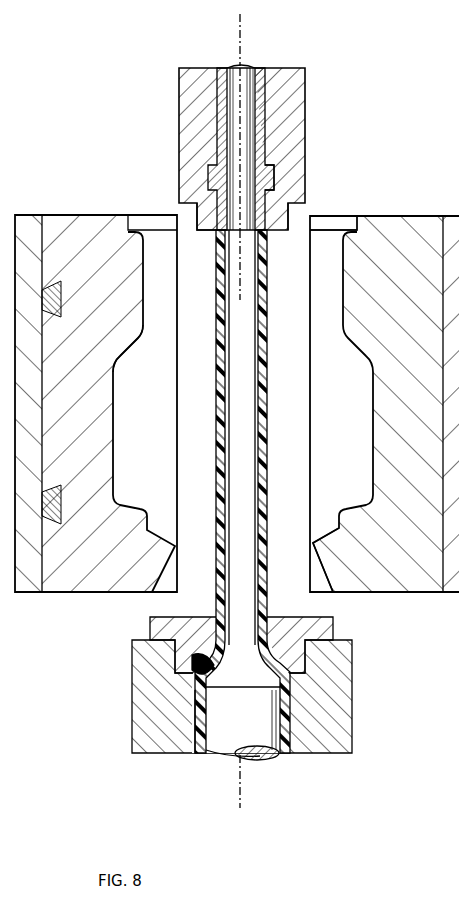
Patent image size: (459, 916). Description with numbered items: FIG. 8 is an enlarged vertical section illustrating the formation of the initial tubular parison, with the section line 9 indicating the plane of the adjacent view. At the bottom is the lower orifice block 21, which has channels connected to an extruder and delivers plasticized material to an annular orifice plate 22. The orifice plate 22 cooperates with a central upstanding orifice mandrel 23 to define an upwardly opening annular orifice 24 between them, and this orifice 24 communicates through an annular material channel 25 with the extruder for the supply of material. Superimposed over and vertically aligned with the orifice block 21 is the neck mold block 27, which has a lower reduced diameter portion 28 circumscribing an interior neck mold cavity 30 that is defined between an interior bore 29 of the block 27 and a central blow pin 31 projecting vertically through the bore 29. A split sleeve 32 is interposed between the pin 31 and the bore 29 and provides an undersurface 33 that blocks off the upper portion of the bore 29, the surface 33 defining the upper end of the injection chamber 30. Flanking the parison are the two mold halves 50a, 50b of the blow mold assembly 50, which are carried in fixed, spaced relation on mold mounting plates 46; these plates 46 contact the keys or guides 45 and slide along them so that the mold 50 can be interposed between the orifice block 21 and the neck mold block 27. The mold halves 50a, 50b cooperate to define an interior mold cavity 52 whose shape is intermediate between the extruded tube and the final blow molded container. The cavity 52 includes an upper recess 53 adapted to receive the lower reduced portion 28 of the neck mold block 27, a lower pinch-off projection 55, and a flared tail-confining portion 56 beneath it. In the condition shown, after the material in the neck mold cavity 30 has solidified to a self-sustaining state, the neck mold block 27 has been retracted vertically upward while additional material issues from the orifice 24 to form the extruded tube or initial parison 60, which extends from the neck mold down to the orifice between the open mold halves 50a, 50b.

The section line 9- 9 is at (240, 22).
The lower orifice block 21 is at (326, 753).
The annular orifice plate 22 is at (333, 640).
The orifice mandrel 23 is at (250, 760).
The annular orifice 24 is at (196, 662).
The annular material channel 25 is at (199, 753).
The neck mold block 27 is at (300, 133).
The lower reduced diameter portion 28 is at (290, 213).
The interior bore 29 is at (268, 185).
The neck mold cavity 30 is at (270, 250).
The blow pin 31 is at (225, 103).
The split sleeve 32 is at (262, 103).
The undersurface 33 is at (205, 212).
The guide 45 is at (55, 298).
The mold mounting plate 46 is at (36, 215).
The blow mold assembly 50 is at (404, 210).
The mold half 50a is at (404, 600).
The mold half 50b is at (78, 600).
The mold cavity 52 is at (123, 360).
The upper recess 53 is at (342, 218).
The pinch-off projection 55 is at (313, 543).
The flared tail-confining portion 56 is at (322, 572).
The initial parison 60 is at (268, 362).